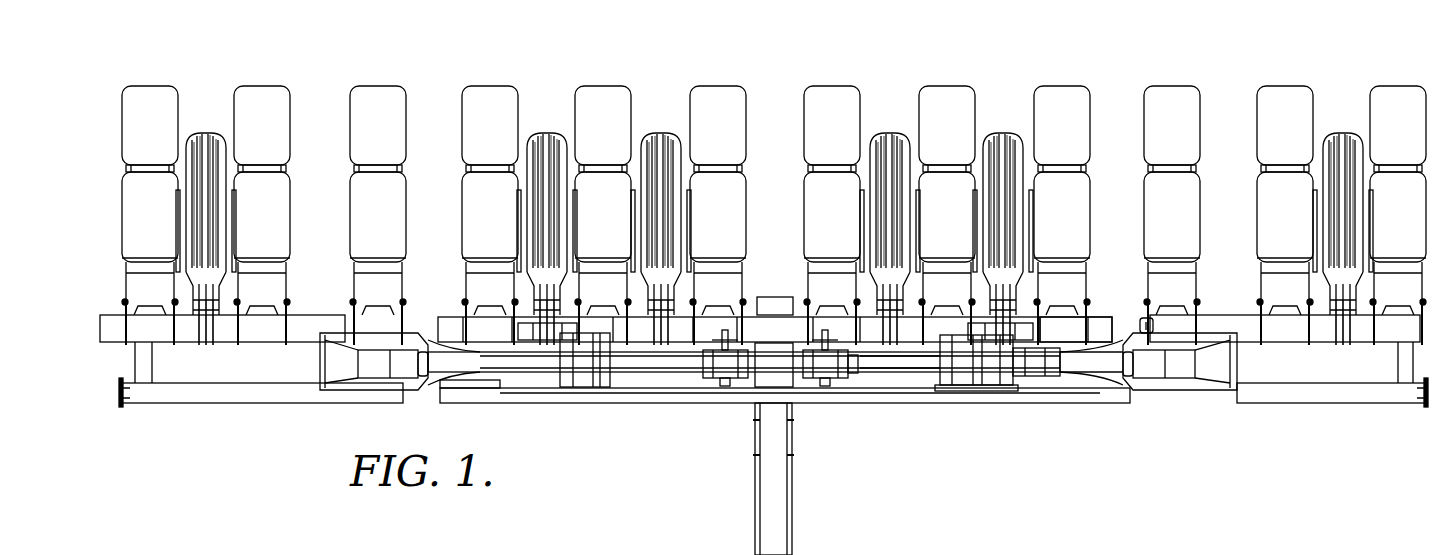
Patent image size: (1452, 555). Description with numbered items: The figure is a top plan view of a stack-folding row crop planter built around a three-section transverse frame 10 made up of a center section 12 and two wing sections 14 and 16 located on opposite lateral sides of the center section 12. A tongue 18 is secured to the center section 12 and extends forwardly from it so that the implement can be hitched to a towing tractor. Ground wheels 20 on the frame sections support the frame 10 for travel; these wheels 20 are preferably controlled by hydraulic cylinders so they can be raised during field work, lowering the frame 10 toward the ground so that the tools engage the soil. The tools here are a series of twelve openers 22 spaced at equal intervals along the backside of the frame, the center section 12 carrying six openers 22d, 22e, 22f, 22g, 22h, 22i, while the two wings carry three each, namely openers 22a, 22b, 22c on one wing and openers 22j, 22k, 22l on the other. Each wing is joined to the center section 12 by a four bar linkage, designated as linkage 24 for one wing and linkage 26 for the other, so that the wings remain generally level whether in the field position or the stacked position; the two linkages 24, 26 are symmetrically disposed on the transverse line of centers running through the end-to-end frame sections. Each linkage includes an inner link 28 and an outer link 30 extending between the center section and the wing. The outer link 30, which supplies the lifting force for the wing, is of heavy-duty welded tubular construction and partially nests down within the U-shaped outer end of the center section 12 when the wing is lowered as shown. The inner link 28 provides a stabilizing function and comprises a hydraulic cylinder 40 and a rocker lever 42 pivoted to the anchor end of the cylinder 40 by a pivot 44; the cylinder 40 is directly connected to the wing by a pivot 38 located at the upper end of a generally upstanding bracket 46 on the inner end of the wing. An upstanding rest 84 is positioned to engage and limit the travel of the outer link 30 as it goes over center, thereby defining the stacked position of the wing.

The frame 10 is at (1105, 403).
The center section 12 is at (682, 405).
The wing section 14 is at (222, 405).
The wing section 16 is at (1370, 405).
The tongue 18 is at (770, 520).
The ground wheels 20 is at (206, 135).
The openers 22 is at (296, 214).
The opener 22a is at (152, 92).
The opener 22b is at (287, 112).
The opener 22c is at (393, 92).
The opener 22d is at (465, 100).
The opener 22e is at (616, 92).
The opener 22f is at (735, 92).
The opener 22g is at (810, 118).
The opener 22h is at (930, 92).
The opener 22i is at (1075, 92).
The opener 22j is at (1150, 108).
The opener 22k is at (1292, 92).
The opener 22l is at (1398, 92).
The four bar linkage 24 is at (483, 380).
The four bar linkage 26 is at (1052, 342).
The inner link 28 is at (1030, 370).
The outer link 30 is at (1063, 373).
The pivot 38 is at (1130, 335).
The hydraulic cylinder 40 is at (918, 366).
The rocker lever 42 is at (803, 380).
The pivot 44 is at (848, 378).
The bracket 46 is at (1195, 388).
The rest 84 is at (962, 380).